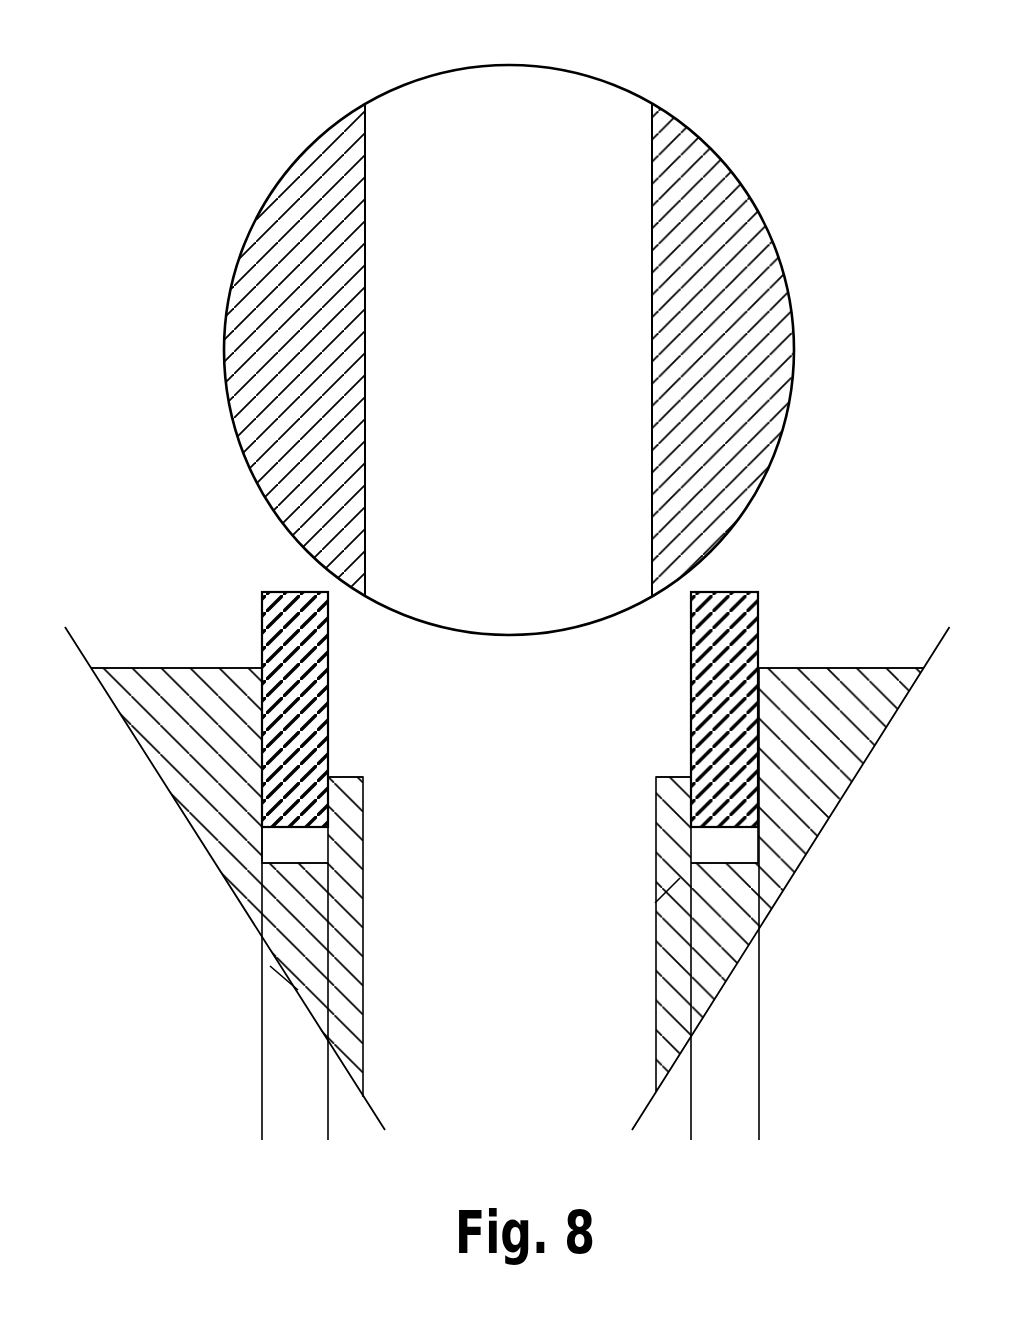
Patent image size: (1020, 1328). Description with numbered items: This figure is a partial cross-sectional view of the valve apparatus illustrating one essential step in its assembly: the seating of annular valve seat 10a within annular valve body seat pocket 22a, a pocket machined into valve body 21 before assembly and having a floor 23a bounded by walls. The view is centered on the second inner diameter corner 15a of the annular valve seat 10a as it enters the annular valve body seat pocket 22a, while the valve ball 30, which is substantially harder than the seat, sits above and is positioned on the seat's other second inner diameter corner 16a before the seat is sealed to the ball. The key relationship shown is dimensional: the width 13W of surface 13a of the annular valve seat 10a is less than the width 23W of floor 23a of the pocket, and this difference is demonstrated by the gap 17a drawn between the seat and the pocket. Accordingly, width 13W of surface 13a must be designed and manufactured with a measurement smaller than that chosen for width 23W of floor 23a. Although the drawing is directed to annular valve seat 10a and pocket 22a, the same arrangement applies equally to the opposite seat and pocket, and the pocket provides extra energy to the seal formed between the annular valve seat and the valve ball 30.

The valve ball 30 is at (683, 125).
The annular valve seat 10a is at (280, 614).
The second inner diameter corner 16a is at (328, 592).
The gap 17a is at (261, 667).
The surface 13a is at (283, 838).
The floor 23a is at (300, 866).
The second inner diameter corner 15a is at (342, 827).
The annular valve body seat pocket 22a is at (250, 884).
The valve body 21 is at (300, 987).
The width of surface 13a 13W is at (363, 1118).
The width of floor 23a 23W is at (795, 1118).